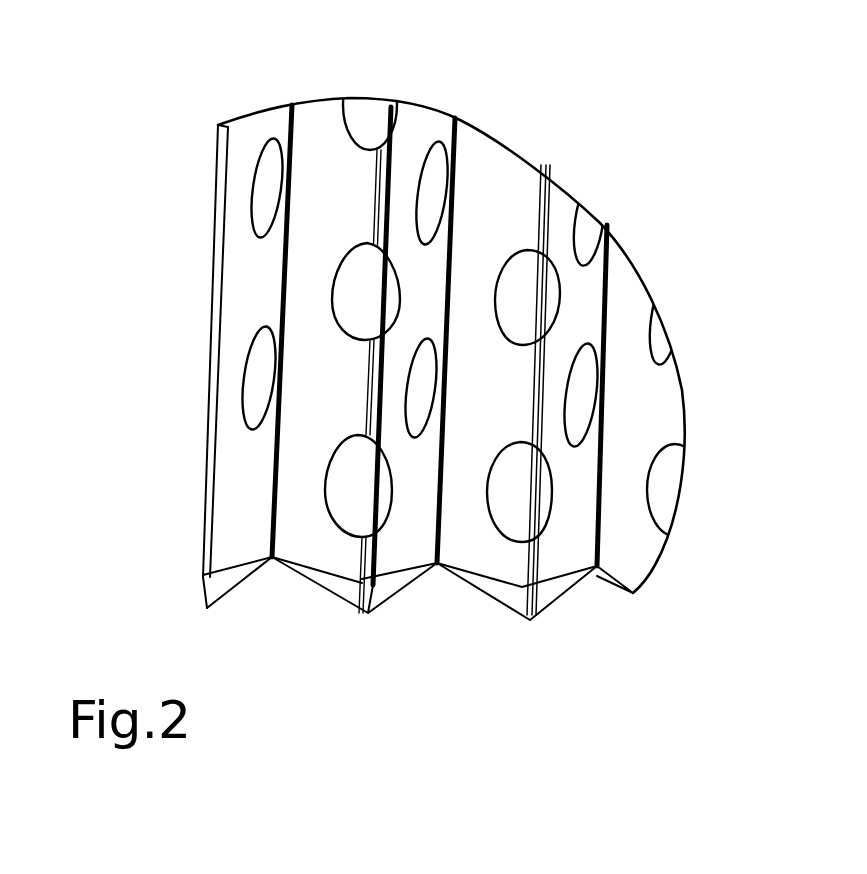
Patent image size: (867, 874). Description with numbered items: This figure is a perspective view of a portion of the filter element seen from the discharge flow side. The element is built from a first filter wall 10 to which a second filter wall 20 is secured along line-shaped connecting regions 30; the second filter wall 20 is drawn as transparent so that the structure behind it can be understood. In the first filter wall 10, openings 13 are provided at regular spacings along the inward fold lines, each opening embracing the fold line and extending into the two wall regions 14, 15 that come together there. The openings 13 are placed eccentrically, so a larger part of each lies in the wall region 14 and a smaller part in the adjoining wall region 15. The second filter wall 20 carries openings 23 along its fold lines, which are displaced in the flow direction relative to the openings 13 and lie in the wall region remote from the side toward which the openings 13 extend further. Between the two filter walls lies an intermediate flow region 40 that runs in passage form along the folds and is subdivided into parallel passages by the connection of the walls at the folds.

The first filter wall 10 is at (200, 572).
The openings 13 is at (353, 472).
The wall region 14 is at (324, 553).
The wall region 15 is at (413, 553).
The second filter wall 20 is at (353, 592).
The openings 23 is at (426, 388).
The line-shaped connecting regions 30 is at (275, 565).
The intermediate flow region 40 is at (203, 588).